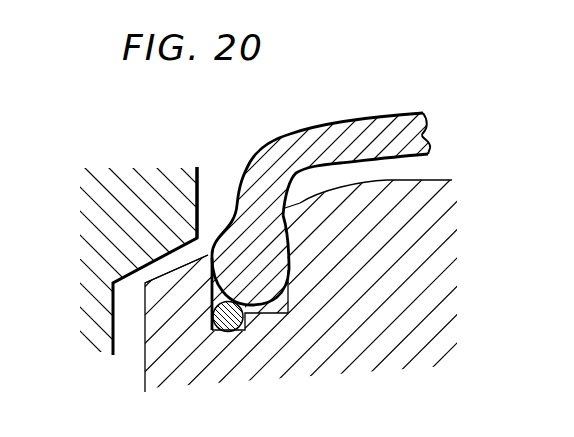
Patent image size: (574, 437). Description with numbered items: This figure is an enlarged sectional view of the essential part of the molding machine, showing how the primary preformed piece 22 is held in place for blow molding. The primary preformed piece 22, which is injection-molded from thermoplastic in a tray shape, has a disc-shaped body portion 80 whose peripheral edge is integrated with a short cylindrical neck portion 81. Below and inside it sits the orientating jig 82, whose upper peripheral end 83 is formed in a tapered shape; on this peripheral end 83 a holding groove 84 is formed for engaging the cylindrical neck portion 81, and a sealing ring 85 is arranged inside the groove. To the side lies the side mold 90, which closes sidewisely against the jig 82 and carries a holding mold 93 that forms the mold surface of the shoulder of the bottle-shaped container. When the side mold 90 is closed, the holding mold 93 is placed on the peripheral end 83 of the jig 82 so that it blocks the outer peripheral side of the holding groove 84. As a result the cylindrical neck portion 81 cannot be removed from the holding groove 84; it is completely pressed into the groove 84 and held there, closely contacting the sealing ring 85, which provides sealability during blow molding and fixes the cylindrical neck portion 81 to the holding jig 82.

The primary preformed piece 22 is at (331, 112).
The body portion 80 is at (397, 138).
The cylindrical neck portion 81 is at (268, 260).
The orientating jig 82 is at (425, 283).
The upper peripheral end 83 is at (160, 278).
The holding groove 84 is at (278, 310).
The sealing ring 85 is at (228, 332).
The side mold 90 is at (98, 338).
The holding mold 93 is at (199, 204).